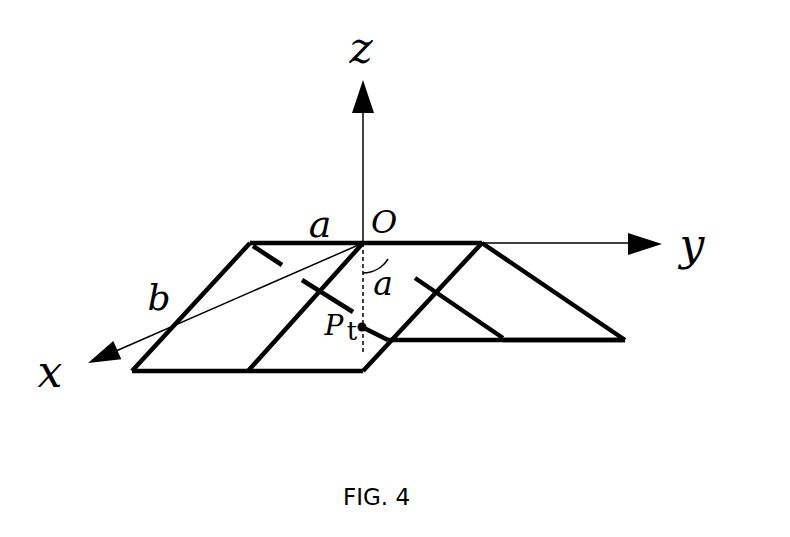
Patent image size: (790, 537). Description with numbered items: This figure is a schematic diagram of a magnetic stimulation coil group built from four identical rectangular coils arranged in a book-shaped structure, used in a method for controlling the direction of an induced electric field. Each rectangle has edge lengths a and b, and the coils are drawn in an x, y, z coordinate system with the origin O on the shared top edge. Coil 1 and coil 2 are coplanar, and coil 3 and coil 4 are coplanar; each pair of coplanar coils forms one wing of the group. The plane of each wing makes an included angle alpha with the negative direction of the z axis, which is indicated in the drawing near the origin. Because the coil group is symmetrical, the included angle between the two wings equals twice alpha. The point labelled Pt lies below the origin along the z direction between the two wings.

The coil 1 is at (197, 297).
The coil 2 is at (460, 350).
The coil 3 is at (305, 372).
The coil 4 is at (583, 343).